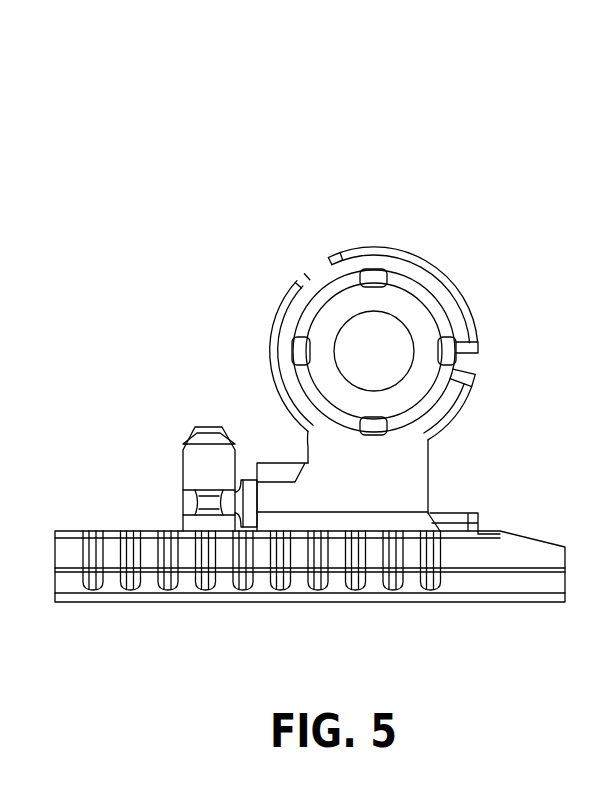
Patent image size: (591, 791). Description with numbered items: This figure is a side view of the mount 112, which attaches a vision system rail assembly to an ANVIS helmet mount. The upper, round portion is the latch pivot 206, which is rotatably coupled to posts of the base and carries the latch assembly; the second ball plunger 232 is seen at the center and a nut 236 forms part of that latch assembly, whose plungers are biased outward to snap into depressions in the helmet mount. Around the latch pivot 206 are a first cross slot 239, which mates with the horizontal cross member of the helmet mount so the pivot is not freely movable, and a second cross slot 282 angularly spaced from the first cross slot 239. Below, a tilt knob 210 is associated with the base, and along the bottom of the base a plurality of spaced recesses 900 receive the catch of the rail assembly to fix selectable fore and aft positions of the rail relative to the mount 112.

The mount 112 is at (426, 136).
The latch pivot 206 is at (374, 248).
The first cross slot 239 is at (331, 270).
The nut 236 is at (433, 292).
The second ball plunger 232 is at (377, 347).
The second cross slot 282 is at (457, 363).
The tilt knob 210 is at (200, 467).
The recess 900 is at (92, 602).